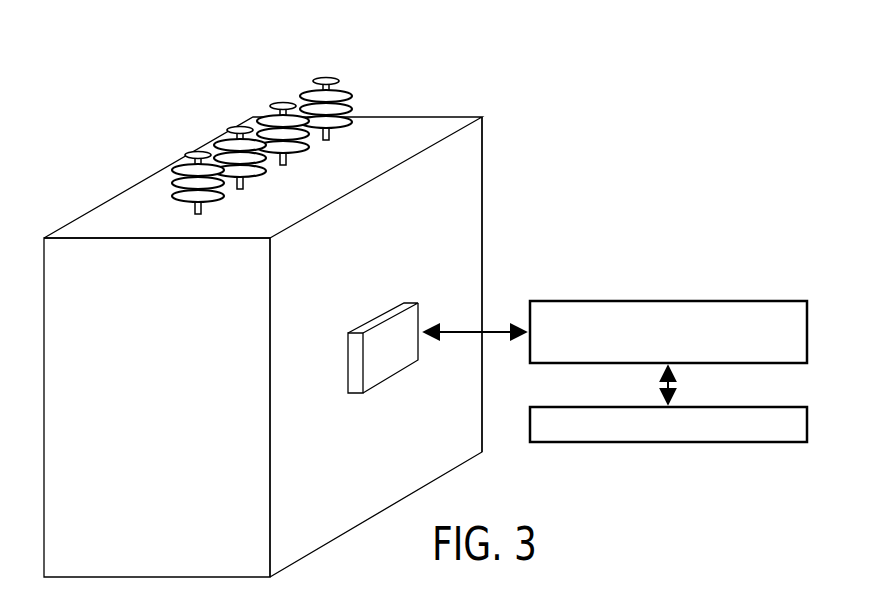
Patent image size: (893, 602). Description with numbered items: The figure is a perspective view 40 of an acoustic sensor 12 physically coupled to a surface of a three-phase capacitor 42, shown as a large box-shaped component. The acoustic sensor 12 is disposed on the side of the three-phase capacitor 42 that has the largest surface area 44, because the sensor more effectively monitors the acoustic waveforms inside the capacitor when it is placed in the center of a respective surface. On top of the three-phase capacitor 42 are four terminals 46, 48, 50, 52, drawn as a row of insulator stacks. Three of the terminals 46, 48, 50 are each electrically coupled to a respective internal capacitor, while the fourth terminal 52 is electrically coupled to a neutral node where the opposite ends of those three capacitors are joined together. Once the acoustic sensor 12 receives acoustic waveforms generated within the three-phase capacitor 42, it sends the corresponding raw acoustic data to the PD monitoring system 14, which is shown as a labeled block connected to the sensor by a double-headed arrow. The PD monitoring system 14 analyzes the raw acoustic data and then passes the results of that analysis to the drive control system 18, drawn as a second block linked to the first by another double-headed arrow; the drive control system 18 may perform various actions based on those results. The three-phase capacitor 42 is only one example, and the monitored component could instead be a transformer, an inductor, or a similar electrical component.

The acoustic sensor 12 is at (392, 312).
The PD monitoring system 14 is at (668, 301).
The drive control system 18 is at (737, 407).
The perspective view 40 is at (106, 108).
The three-phase capacitor 42 is at (436, 117).
The largest surface area 44 is at (461, 205).
The terminal 46 is at (190, 154).
The terminal 48 is at (232, 130).
The terminal 50 is at (275, 105).
The fourth terminal 52 is at (318, 80).